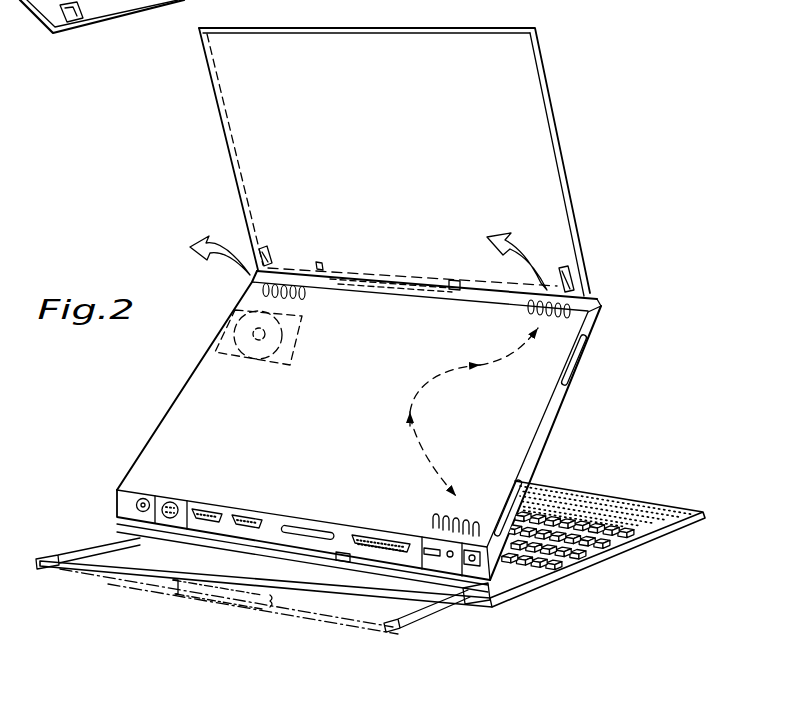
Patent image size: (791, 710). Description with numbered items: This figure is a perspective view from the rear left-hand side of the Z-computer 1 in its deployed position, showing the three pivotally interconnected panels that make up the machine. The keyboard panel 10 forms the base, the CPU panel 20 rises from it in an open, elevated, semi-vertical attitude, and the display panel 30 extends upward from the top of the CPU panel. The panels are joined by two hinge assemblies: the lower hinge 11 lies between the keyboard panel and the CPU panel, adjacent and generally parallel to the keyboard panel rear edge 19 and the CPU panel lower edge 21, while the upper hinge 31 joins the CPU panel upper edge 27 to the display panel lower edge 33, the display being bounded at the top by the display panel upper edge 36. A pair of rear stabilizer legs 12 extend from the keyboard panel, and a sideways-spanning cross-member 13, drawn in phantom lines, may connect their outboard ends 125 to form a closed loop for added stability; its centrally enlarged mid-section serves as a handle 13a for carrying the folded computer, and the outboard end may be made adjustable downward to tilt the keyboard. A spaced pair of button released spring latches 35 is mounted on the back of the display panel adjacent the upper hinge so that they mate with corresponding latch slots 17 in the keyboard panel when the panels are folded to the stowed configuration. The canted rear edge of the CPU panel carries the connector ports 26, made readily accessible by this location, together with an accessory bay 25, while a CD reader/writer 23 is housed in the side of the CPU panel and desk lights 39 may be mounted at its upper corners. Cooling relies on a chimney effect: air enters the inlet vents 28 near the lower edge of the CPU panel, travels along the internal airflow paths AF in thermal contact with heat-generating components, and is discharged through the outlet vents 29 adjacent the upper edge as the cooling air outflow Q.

The Z-computer 1 is at (605, 250).
The keyboard panel 10 is at (604, 491).
The lower hinge 11 is at (342, 553).
The rear stabilizer leg 12 is at (60, 555).
The outboard end of stabilizer leg 125 is at (43, 570).
The stabilizer cross-member 13 is at (152, 592).
The handle portion of cross-member 13a is at (210, 598).
The latch slot 17 is at (89, 24).
The keyboard panel rear edge 19 is at (493, 603).
The CPU panel 20 is at (385, 422).
The CPU panel lower edge 21 is at (118, 507).
The CD reader/writer 23 is at (220, 357).
The accessory bay 25 is at (580, 355).
The connector ports 26 is at (284, 510).
The CPU panel upper edge 27 is at (472, 295).
The cooling air inlet vents 28 is at (477, 512).
The cooling air outlet vents 29 is at (298, 298).
The display panel 30 is at (409, 162).
The upper hinge 31 is at (420, 276).
The display panel lower edge 33 is at (319, 266).
The button released spring latch 35 is at (269, 249).
The display panel upper edge 36 is at (369, 30).
The side-mounted desk light 39 is at (601, 305).
The internal airflow path AF is at (470, 379).
The cooling air outflow Q is at (358, 249).